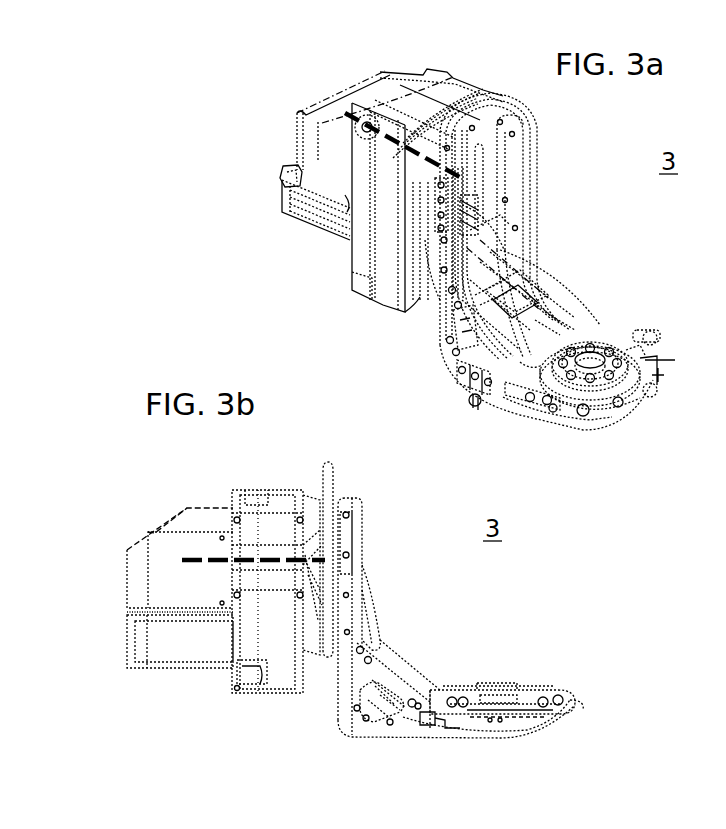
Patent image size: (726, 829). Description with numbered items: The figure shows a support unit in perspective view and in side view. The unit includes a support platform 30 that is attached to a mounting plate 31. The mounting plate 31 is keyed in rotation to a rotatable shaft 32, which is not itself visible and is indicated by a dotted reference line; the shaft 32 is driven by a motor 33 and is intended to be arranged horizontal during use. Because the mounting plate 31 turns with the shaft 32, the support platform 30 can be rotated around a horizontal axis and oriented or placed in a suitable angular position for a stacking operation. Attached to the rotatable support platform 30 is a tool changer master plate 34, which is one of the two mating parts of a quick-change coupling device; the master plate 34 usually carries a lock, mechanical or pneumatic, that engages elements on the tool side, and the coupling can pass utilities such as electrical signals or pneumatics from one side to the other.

In FIG. 3a, the support platform 30 is at (550, 313).
In FIG. 3b, the support platform 30 is at (365, 730).
In FIG. 3a, the mounting plate 31 is at (492, 158).
In FIG. 3b, the mounting plate 31 is at (332, 493).
In FIG. 3a, the rotatable shaft 32 is at (393, 137).
In FIG. 3b, the rotatable shaft 32 is at (267, 558).
In FIG. 3a, the motor 33 is at (333, 168).
In FIG. 3b, the motor 33 is at (165, 588).
In FIG. 3a, the tool changer master plate 34 is at (613, 347).
In FIG. 3b, the tool changer master plate 34 is at (520, 690).